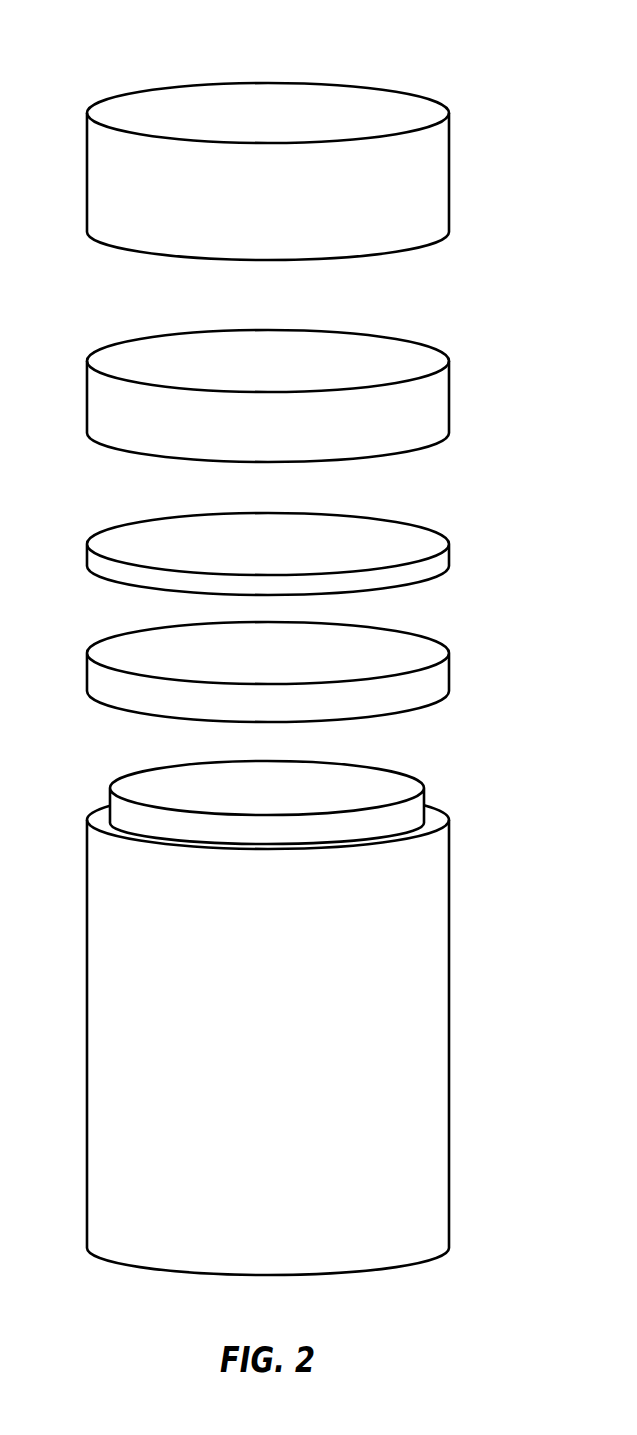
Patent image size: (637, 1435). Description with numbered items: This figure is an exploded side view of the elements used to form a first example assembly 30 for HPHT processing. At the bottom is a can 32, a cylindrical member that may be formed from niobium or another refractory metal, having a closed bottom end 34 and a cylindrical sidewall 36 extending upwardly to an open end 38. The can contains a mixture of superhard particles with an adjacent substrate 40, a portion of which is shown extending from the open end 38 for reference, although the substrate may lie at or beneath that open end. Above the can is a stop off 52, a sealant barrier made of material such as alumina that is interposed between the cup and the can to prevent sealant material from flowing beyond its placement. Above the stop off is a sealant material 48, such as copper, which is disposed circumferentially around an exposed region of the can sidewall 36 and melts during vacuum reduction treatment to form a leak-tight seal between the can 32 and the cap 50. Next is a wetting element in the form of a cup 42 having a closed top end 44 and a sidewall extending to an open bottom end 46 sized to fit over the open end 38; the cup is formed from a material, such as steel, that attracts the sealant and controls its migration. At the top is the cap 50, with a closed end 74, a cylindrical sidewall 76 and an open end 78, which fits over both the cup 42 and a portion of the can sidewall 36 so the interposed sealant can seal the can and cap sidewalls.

The assembly 30 is at (458, 60).
The can 32 is at (452, 951).
The closed bottom end 34 is at (367, 1272).
The cylindrical sidewall 36 is at (450, 1032).
The open end 38 is at (435, 820).
The substrate 40 is at (416, 805).
The cup 42 is at (452, 389).
The closed top end 44 is at (367, 353).
The open bottom end 46 is at (104, 443).
The sealant material 48 is at (452, 667).
The cap 50 is at (452, 135).
The stop off 52 is at (106, 569).
The closed end 74 is at (105, 118).
The cylindrical sidewall 76 is at (86, 175).
The open end 78 is at (104, 243).